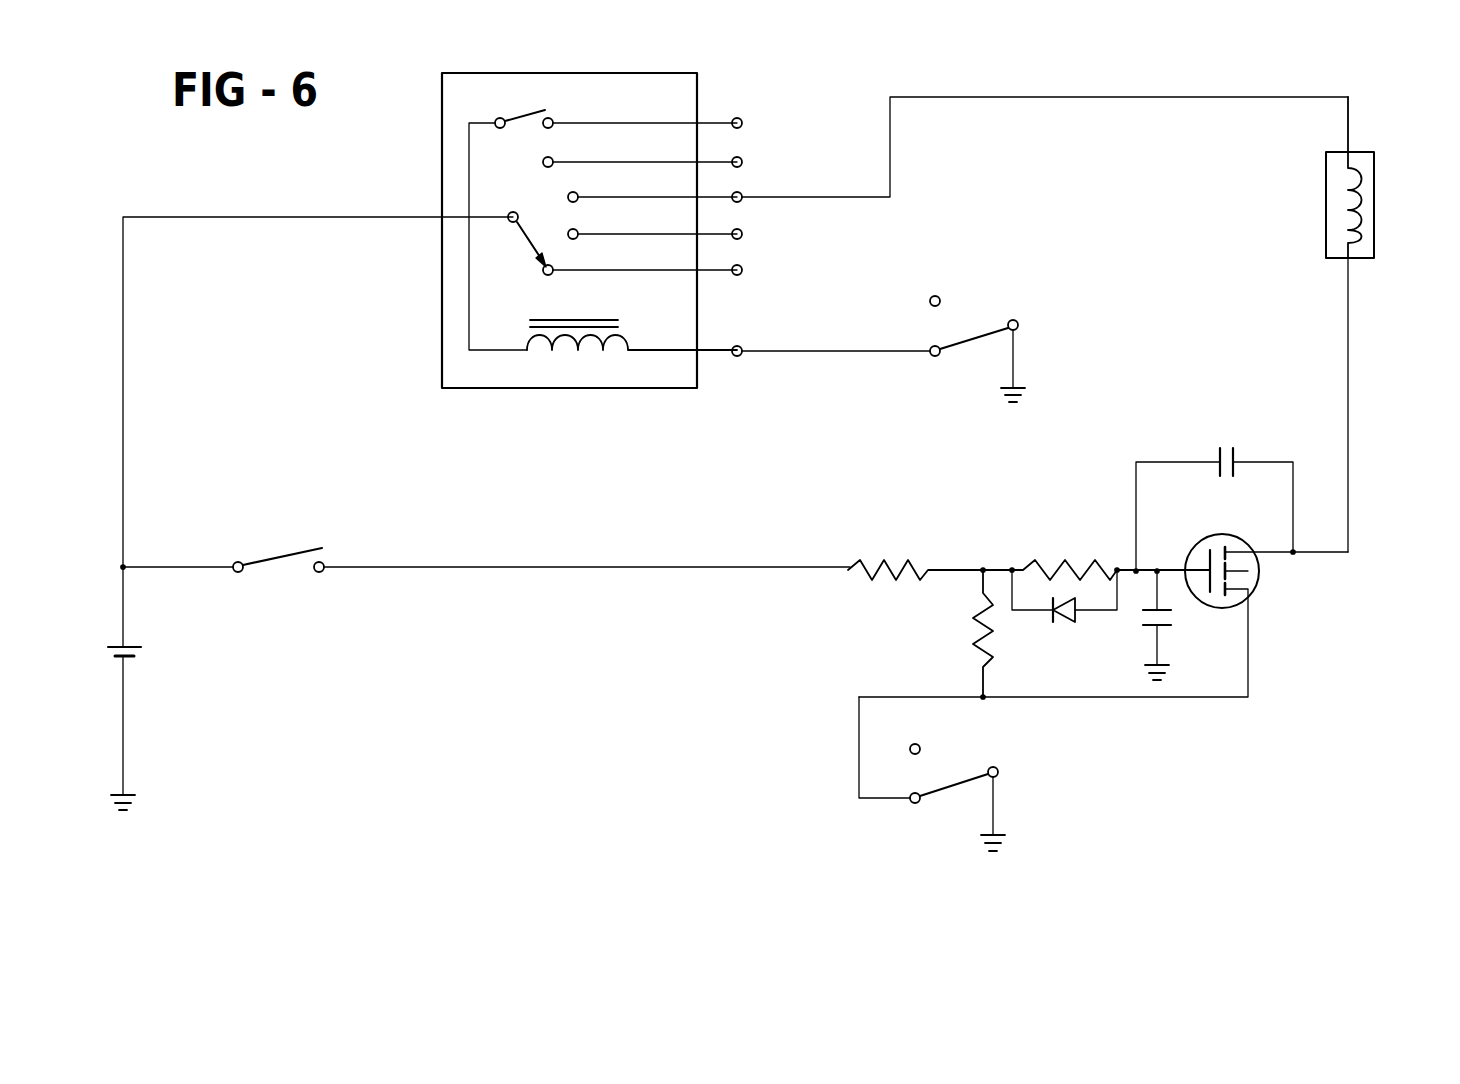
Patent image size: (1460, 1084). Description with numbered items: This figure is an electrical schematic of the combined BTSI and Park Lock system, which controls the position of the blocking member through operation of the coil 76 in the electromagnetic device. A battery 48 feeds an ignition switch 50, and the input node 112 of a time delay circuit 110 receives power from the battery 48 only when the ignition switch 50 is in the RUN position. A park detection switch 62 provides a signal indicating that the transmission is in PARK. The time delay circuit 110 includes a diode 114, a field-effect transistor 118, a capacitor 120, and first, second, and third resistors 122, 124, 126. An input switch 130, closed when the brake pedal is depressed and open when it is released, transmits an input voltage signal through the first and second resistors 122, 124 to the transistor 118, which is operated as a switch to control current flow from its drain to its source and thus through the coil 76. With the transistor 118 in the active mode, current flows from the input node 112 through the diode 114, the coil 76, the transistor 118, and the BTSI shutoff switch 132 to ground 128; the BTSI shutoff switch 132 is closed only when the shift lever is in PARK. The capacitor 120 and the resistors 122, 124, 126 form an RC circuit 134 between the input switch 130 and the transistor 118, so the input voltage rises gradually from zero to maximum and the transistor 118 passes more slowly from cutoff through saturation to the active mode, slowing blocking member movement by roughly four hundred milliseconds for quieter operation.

The battery 48 is at (155, 655).
The ignition switch 50 is at (580, 388).
The park detection switch 62 is at (975, 330).
The coil 76 is at (1376, 198).
The time delay circuit 110 is at (820, 133).
The input node 112 is at (745, 203).
The diode 114 is at (1063, 623).
The field-effect transistor 118 is at (1260, 581).
The capacitor 120 is at (1240, 452).
The first resistor 122 is at (858, 560).
The second resistor 124 is at (1064, 560).
The third resistor 126 is at (976, 632).
The ground 128 is at (1003, 832).
The input switch 130 is at (284, 556).
The BTSI shutoff switch 132 is at (956, 778).
The RC circuit 134 is at (1104, 540).